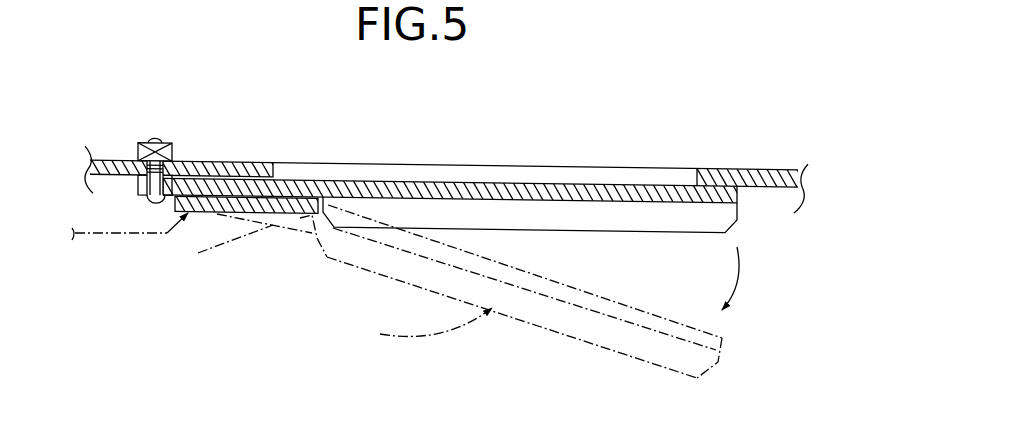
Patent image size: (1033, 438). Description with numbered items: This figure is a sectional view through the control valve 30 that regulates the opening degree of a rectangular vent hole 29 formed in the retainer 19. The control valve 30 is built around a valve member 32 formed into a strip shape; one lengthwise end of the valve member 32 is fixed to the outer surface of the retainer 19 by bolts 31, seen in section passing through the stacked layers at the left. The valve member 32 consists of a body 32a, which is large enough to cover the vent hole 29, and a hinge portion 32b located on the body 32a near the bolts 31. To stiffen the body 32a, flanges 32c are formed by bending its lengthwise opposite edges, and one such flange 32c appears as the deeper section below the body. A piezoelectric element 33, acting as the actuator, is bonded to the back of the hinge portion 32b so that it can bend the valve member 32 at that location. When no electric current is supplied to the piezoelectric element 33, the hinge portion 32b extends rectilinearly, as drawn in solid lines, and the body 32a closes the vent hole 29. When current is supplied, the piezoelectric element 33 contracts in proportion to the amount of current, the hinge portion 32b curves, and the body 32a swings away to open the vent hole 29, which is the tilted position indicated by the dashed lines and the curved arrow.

The retainer 19 is at (750, 173).
The vent hole 29 is at (273, 170).
The control valve 30 is at (447, 147).
The bolts 31 is at (157, 140).
The valve member 32 is at (495, 230).
The body 32a is at (587, 188).
The hinge portion 32b is at (242, 183).
The flanges 32c is at (610, 222).
The piezoelectric element 33 is at (206, 215).